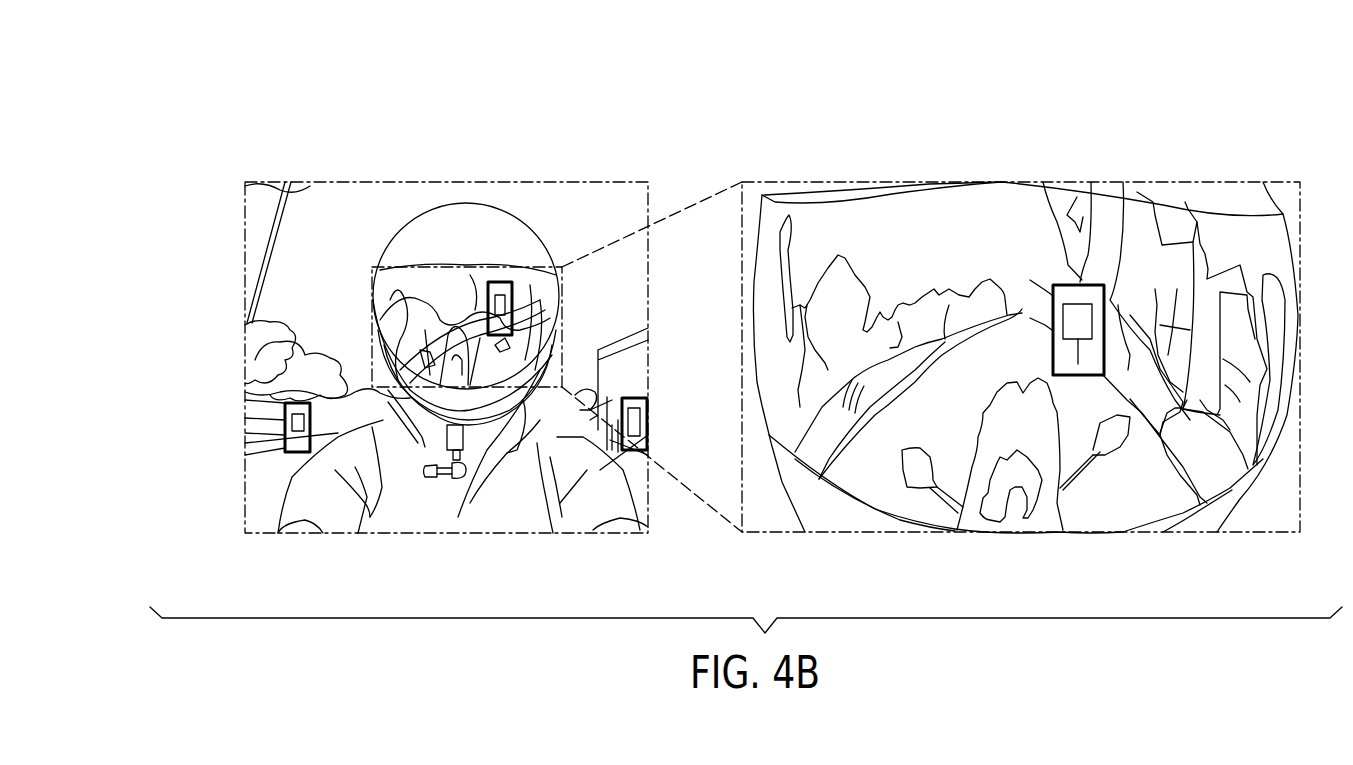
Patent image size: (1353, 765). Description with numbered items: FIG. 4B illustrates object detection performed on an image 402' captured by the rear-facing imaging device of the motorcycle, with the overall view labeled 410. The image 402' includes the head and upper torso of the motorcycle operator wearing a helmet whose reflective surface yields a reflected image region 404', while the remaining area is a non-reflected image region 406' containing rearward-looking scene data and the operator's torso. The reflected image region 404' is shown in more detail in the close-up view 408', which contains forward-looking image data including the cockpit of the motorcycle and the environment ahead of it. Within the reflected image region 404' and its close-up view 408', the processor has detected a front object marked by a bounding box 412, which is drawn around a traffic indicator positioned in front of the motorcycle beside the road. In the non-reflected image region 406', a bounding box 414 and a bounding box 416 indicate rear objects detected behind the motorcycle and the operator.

The image 402' is at (300, 231).
The reflected image region 404' is at (446, 329).
The non-reflected image region 406' is at (287, 359).
The close-up view 408' is at (1025, 336).
The captured image / view 410 is at (1157, 88).
The bounding box 412 is at (512, 284).
The bounding box 414 is at (285, 447).
The bounding box 416 is at (640, 382).